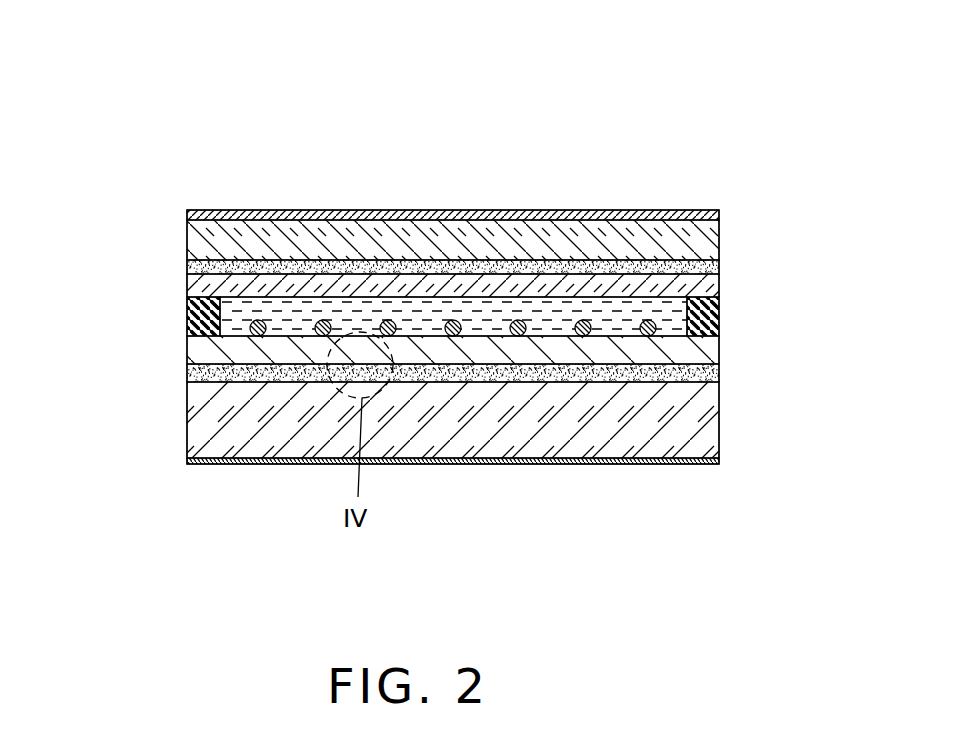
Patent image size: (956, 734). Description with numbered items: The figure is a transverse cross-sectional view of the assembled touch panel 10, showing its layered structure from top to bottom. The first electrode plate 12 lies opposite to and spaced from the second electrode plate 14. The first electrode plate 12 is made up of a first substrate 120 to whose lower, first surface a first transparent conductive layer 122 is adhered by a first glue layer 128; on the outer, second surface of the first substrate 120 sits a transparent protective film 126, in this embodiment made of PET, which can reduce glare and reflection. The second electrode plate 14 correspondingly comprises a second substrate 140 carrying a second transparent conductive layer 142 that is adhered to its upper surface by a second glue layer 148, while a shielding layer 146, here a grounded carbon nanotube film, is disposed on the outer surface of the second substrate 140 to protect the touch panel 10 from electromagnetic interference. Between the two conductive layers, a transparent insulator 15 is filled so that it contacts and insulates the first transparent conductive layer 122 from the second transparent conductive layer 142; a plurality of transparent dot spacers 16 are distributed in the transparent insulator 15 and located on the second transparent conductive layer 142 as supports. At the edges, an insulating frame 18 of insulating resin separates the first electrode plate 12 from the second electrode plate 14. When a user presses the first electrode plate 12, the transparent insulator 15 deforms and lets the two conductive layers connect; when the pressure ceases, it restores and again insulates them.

The touch panel 10 is at (435, 48).
The first electrode plate 12 is at (82, 205).
The second electrode plate 14 is at (82, 328).
The transparent insulator 15 is at (670, 310).
The transparent dot spacers 16 is at (250, 326).
The insulating frame 18 is at (697, 324).
The first substrate 120 is at (203, 235).
The first transparent conductive layer 122 is at (207, 292).
The transparent protective film 126 is at (224, 216).
The first glue layer 128 is at (197, 267).
The second substrate 140 is at (207, 428).
The second transparent conductive layer 142 is at (207, 352).
The shielding layer 146 is at (207, 460).
The second glue layer 148 is at (198, 377).